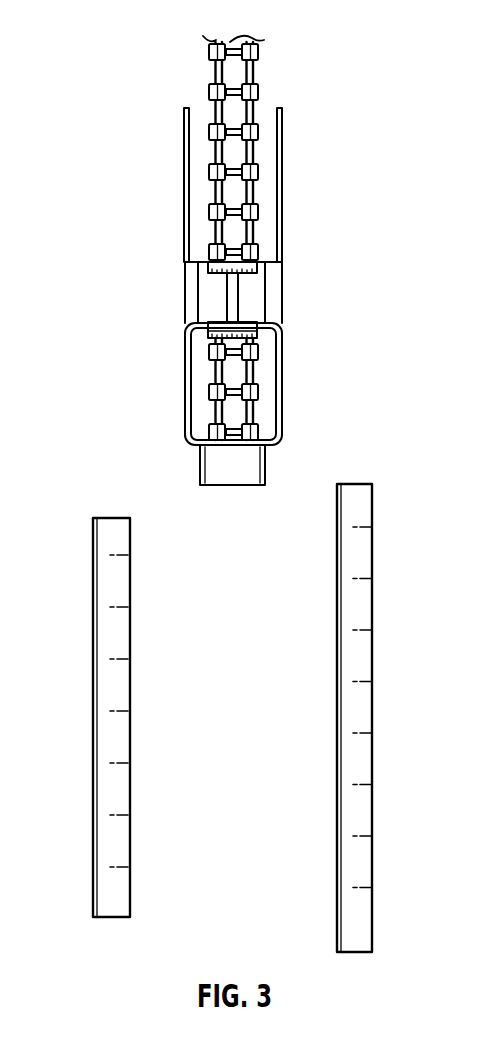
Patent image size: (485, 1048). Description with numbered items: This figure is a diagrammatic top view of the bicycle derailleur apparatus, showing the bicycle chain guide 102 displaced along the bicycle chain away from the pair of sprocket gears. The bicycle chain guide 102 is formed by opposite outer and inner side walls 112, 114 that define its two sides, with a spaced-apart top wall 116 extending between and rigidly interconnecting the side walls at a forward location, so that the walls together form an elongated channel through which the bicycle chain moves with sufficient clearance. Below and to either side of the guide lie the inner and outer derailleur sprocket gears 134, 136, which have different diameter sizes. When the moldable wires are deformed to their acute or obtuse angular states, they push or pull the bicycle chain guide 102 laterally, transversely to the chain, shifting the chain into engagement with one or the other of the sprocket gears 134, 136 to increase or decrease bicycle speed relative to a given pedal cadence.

The bicycle chain guide 102 is at (146, 122).
The outer side wall 112 is at (185, 357).
The inner side wall 114 is at (283, 172).
The top wall 116 is at (183, 183).
The inner derailleur sprocket gear 134 is at (372, 742).
The outer derailleur sprocket gear 136 is at (93, 805).